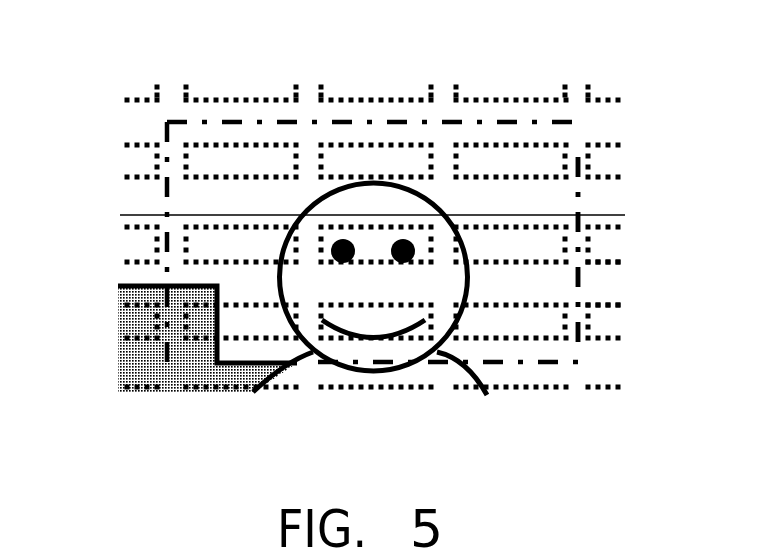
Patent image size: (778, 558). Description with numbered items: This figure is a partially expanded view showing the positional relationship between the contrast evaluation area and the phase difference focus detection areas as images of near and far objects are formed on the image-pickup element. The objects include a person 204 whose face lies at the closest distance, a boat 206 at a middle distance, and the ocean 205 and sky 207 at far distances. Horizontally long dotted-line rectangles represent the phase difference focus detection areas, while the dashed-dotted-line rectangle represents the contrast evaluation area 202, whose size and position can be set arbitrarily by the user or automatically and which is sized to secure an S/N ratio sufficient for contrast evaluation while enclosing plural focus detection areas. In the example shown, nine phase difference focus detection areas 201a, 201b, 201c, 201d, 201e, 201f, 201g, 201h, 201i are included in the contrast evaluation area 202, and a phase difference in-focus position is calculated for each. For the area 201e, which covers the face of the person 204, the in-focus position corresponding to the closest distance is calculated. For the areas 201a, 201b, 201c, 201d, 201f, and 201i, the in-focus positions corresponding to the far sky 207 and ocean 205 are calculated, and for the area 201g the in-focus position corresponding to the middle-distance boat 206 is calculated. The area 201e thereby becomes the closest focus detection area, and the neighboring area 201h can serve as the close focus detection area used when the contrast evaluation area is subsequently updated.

The phase difference focus detection area 201a is at (253, 142).
The phase difference focus detection area 201b is at (392, 142).
The phase difference focus detection area 201c is at (547, 142).
The phase difference focus detection area 201d is at (187, 242).
The phase difference focus detection area 201e is at (323, 250).
The phase difference focus detection area 201f is at (567, 236).
The phase difference focus detection area 201g is at (197, 333).
The phase difference focus detection area 201h is at (333, 335).
The phase difference focus detection area 201i is at (488, 335).
The contrast evaluation area 202 is at (577, 140).
The person 204 is at (430, 372).
The ocean 205 is at (603, 290).
The boat 206 is at (147, 357).
The sky 207 is at (588, 192).